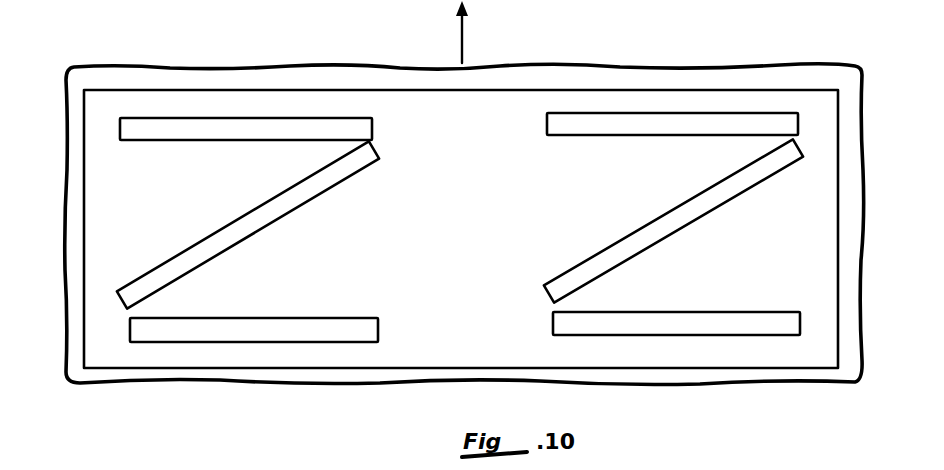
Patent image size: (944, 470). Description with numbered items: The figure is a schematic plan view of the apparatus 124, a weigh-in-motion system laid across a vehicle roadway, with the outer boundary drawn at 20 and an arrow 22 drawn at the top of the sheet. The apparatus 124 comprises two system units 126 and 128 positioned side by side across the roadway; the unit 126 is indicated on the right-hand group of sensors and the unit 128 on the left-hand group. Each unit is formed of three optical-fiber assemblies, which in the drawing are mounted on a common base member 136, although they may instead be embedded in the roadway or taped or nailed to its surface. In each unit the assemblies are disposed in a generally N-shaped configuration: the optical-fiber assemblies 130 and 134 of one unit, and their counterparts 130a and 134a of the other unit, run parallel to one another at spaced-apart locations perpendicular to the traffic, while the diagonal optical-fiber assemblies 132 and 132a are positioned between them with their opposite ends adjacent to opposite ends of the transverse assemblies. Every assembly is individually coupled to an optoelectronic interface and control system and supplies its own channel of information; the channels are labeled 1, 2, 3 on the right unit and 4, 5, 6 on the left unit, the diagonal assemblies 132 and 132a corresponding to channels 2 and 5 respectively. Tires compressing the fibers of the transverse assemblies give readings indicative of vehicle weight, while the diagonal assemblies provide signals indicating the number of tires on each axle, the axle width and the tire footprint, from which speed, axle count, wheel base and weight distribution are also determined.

The housing / enclosure 20 is at (393, 372).
The base member 136 is at (396, 105).
The direction arrow 22 is at (464, 38).
The apparatus 124 is at (570, 100).
The system unit 126 is at (552, 189).
The system unit 128 is at (326, 218).
The left upper bar element 134a is at (242, 154).
The element position 6 is at (182, 141).
The optical-fiber assembly 132a is at (241, 224).
The channel 5 is at (288, 203).
The left lower bar element 130a is at (254, 306).
The element position 4 is at (212, 322).
The optical-fiber assembly 134 is at (672, 147).
The element position 3 is at (692, 127).
The optical-fiber assembly 132 is at (673, 220).
The channel 2 is at (640, 238).
The optical-fiber assembly 130 is at (676, 302).
The element position 1 is at (604, 320).